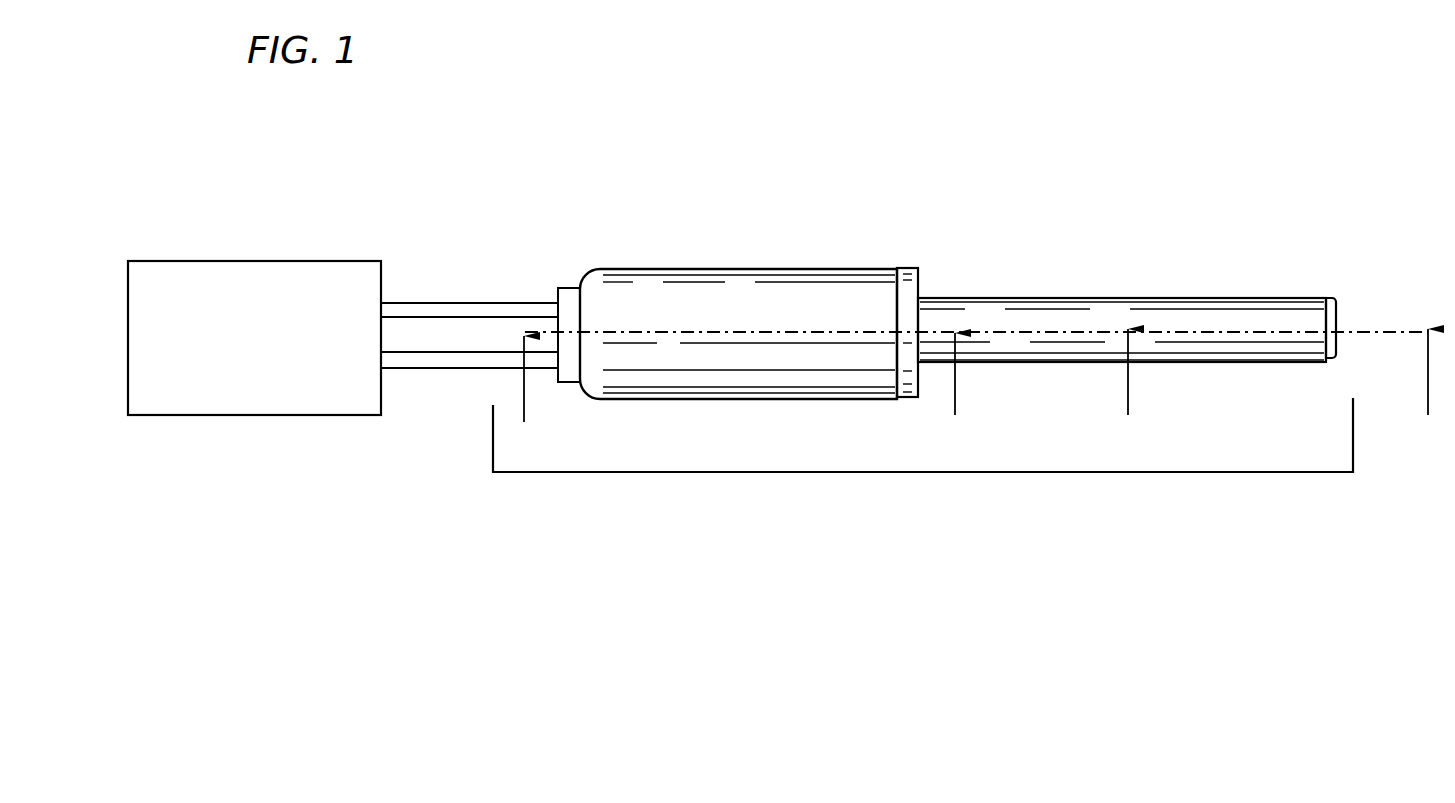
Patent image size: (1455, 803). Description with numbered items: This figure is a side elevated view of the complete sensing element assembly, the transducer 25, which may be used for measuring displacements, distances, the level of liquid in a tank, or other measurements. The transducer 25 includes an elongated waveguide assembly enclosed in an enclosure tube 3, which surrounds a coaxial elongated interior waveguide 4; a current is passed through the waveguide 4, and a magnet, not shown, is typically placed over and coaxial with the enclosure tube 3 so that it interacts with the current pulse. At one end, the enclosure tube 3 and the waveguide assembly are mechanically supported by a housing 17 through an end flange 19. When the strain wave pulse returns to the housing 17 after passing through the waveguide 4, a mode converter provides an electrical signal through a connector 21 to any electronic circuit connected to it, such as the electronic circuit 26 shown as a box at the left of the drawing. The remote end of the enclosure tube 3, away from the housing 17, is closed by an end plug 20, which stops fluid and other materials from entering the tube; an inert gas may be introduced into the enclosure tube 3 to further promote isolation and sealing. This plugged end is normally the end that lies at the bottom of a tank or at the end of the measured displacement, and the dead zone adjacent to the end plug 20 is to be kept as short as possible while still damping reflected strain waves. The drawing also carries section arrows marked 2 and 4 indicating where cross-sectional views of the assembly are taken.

The electronic circuit 26 is at (238, 260).
The connector 21 is at (562, 288).
The housing 17 is at (756, 268).
The end flange 19 is at (908, 268).
The enclosure tube 3 is at (1128, 298).
The end plug 20 is at (1334, 297).
The transducer 25 is at (999, 472).
The waveguide 4 is at (739, 395).
The section line 2 is at (1278, 392).